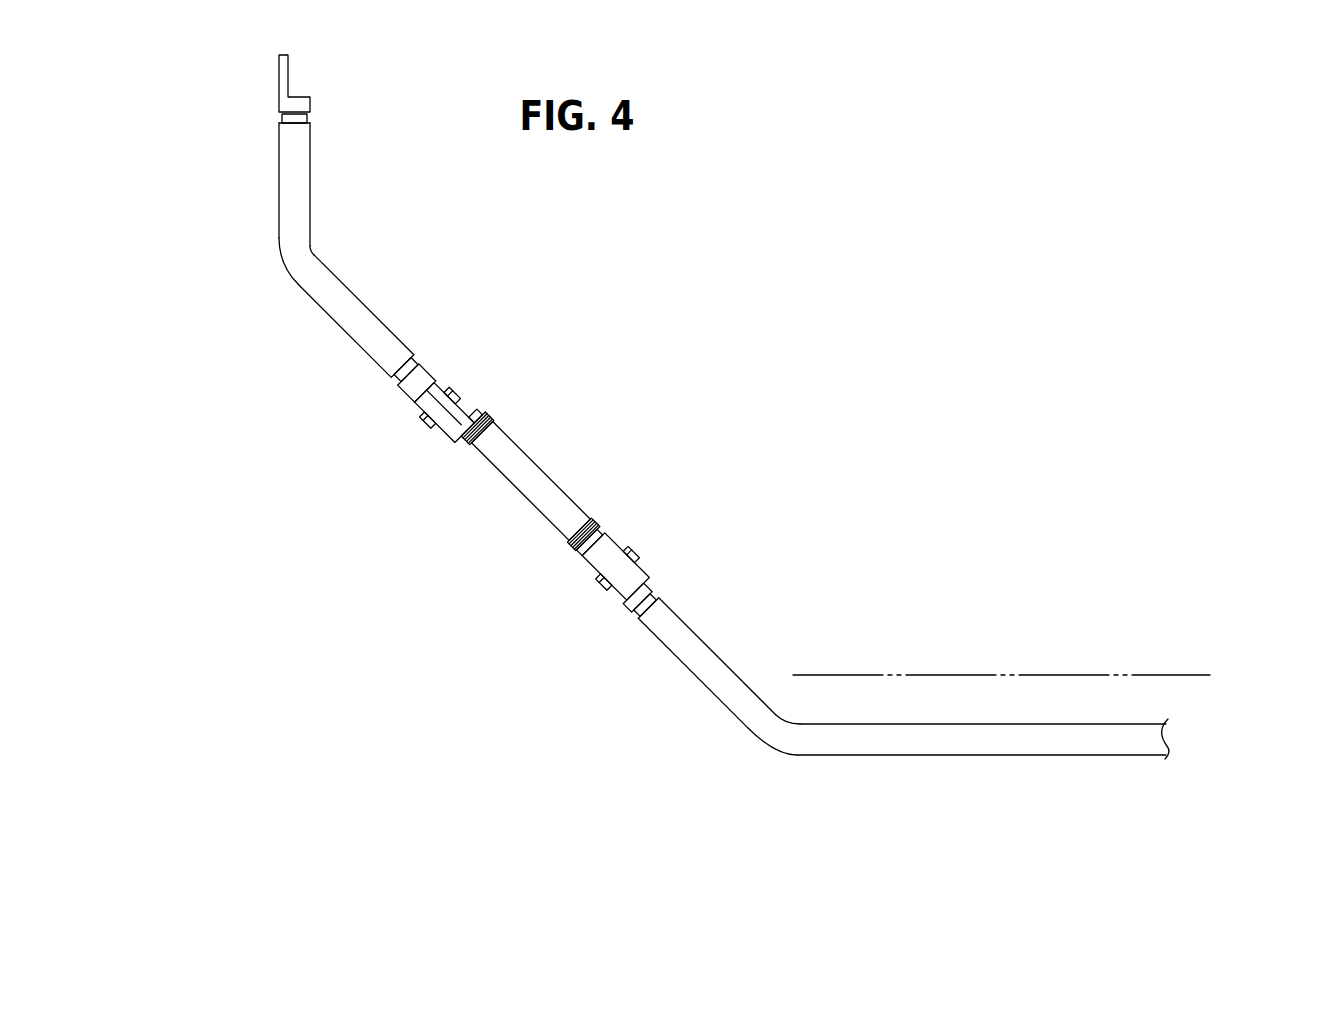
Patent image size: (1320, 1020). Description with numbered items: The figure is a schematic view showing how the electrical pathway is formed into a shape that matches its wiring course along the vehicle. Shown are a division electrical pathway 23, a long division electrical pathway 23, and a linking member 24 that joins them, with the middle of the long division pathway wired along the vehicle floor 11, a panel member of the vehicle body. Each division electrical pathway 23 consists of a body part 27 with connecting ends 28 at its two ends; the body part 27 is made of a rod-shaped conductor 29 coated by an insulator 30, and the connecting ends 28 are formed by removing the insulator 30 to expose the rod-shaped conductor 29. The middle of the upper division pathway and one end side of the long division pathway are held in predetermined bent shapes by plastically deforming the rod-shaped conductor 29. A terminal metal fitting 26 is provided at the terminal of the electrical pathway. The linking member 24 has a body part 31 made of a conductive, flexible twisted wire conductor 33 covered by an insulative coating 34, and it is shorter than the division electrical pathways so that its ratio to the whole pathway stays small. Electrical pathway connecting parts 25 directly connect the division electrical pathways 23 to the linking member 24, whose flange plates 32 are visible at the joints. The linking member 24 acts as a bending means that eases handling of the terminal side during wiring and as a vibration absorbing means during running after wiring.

The vehicle floor 11 is at (1185, 675).
The division electrical pathway 23 is at (643, 479).
The linking member 24 is at (486, 484).
The electrical pathway connecting part 25 is at (478, 373).
The terminal metal fitting 26 is at (281, 75).
The body part 27 is at (343, 318).
The connecting end 28 is at (307, 116).
The rod-shaped conductor 29 is at (308, 234).
The insulator 30 is at (312, 257).
The body part 31 is at (543, 505).
The flange plate 32 is at (487, 418).
The twisted wire conductor 33 is at (523, 440).
The coating 34 is at (577, 453).